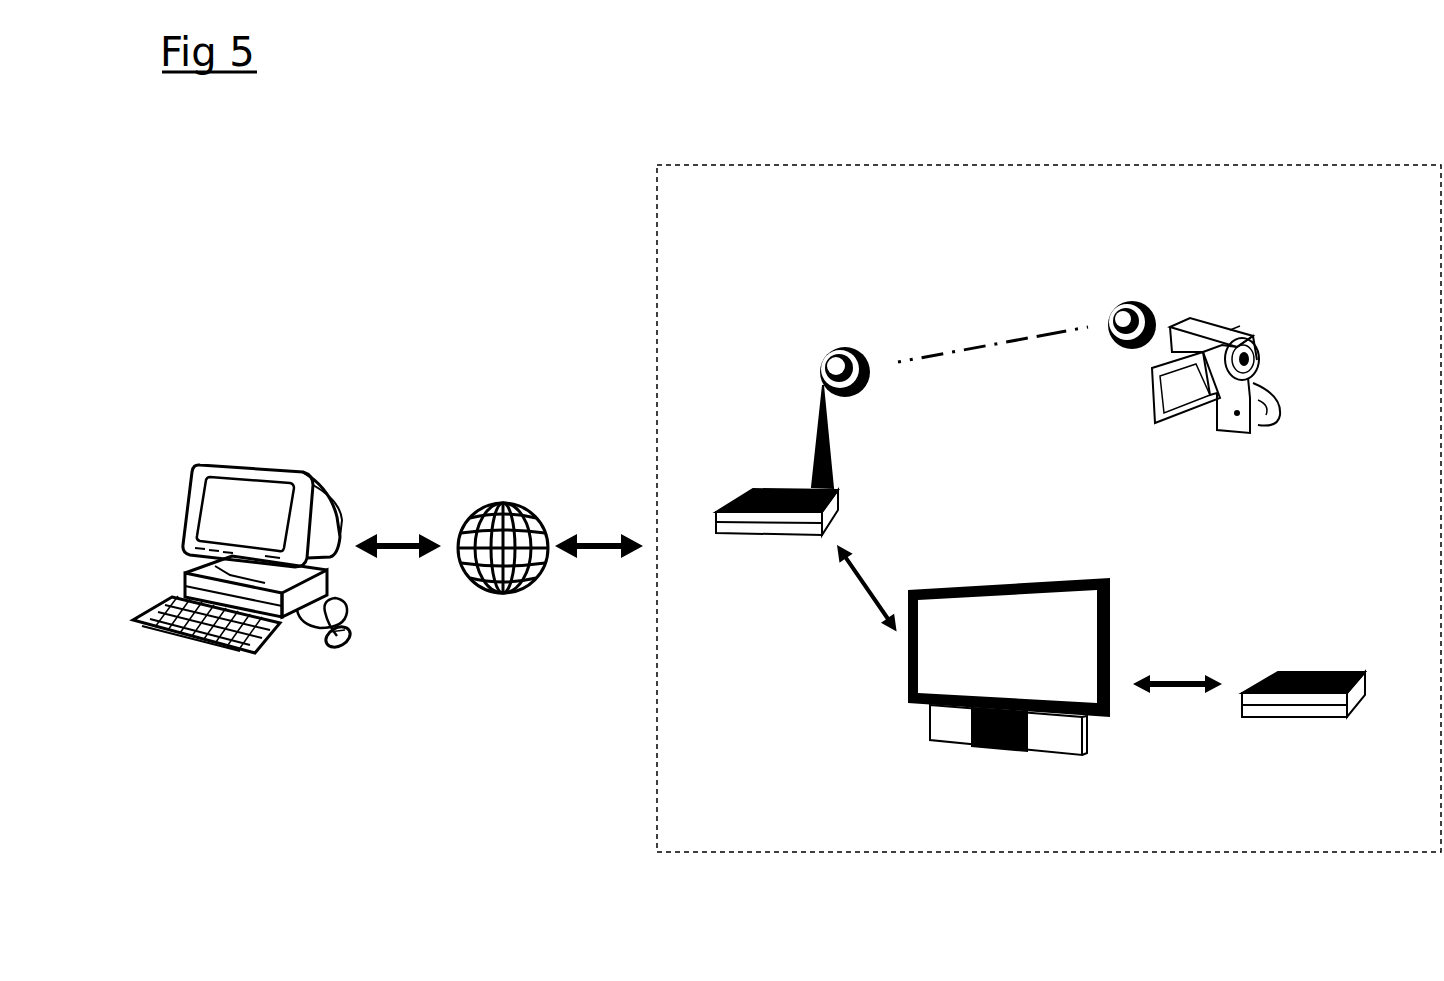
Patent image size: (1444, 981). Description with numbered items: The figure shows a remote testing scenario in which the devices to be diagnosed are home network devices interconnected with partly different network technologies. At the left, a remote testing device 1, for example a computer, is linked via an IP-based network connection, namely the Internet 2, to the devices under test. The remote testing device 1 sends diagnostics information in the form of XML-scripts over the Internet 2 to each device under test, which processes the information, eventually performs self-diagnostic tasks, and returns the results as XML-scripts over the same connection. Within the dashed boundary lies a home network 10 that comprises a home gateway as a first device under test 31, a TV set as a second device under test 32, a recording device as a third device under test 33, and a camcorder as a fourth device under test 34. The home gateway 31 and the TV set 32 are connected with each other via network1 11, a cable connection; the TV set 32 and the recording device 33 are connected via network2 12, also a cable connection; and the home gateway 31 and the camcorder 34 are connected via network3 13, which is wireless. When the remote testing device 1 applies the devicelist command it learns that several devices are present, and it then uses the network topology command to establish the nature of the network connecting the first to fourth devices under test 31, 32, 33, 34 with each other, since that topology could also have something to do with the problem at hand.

The remote testing device 1 is at (257, 457).
The Internet 2 is at (505, 503).
The home network 10 is at (657, 197).
The network1 11 is at (863, 588).
The network2 12 is at (1175, 682).
The network3 13 is at (1042, 335).
The home gateway 31 is at (802, 477).
The TV set 32 is at (1005, 748).
The recording device 33 is at (1282, 720).
The camcorder 34 is at (1268, 360).